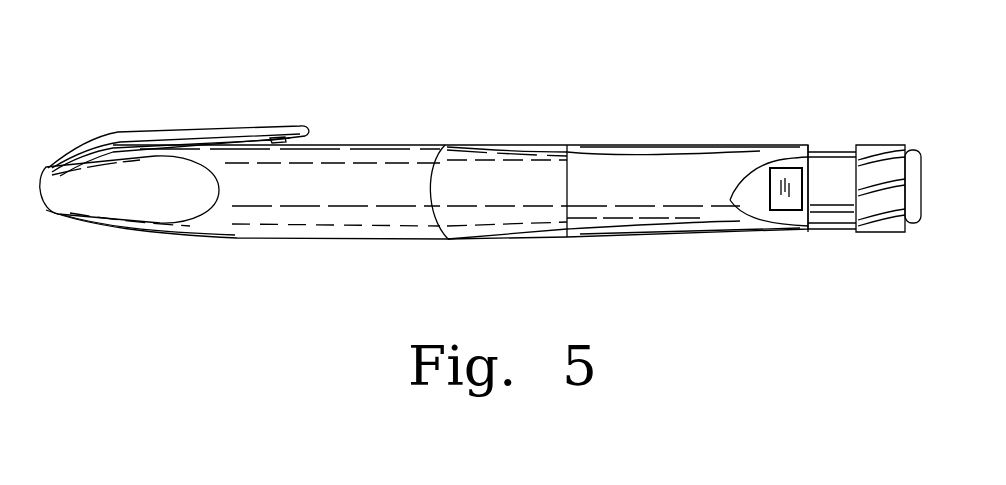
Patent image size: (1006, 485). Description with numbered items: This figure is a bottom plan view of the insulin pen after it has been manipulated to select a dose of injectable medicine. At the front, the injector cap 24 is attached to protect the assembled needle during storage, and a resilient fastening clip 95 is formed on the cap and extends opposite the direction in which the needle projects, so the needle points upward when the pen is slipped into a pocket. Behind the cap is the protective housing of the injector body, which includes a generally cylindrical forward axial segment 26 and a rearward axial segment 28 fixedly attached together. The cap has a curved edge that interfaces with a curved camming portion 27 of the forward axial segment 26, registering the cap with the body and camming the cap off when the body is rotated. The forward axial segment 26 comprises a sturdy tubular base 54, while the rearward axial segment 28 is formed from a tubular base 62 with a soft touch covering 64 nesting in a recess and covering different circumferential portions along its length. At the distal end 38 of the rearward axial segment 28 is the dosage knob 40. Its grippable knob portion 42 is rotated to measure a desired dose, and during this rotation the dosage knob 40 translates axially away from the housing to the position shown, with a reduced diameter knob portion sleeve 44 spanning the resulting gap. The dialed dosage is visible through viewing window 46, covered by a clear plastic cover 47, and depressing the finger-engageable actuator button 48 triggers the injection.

The injector cap 24 is at (252, 291).
The forward axial segment 26 is at (489, 241).
The curved camming portion 27 is at (437, 186).
The rearward axial segment 28 is at (660, 125).
The distal end 38 is at (812, 173).
The dosage knob 40 is at (901, 242).
The knob portion 42 is at (881, 161).
The knob portion sleeve 44 is at (837, 207).
The viewing window 46 is at (792, 212).
The clear plastic cover 47 is at (758, 196).
The actuator button 48 is at (922, 188).
The tubular base 54 is at (498, 153).
The tubular base 62 is at (585, 172).
The soft touch covering 64 is at (690, 148).
The fastening clip 95 is at (112, 147).